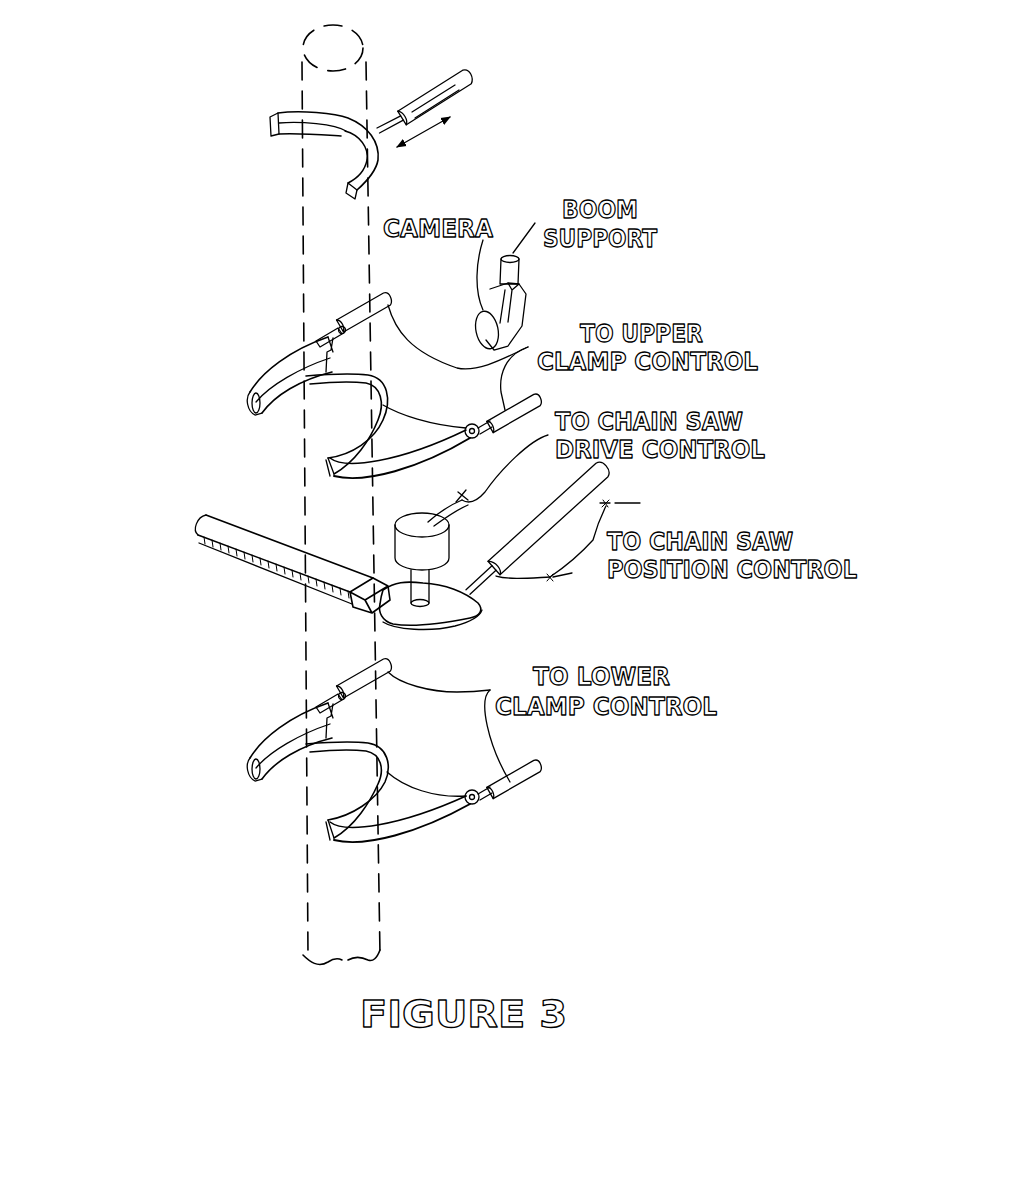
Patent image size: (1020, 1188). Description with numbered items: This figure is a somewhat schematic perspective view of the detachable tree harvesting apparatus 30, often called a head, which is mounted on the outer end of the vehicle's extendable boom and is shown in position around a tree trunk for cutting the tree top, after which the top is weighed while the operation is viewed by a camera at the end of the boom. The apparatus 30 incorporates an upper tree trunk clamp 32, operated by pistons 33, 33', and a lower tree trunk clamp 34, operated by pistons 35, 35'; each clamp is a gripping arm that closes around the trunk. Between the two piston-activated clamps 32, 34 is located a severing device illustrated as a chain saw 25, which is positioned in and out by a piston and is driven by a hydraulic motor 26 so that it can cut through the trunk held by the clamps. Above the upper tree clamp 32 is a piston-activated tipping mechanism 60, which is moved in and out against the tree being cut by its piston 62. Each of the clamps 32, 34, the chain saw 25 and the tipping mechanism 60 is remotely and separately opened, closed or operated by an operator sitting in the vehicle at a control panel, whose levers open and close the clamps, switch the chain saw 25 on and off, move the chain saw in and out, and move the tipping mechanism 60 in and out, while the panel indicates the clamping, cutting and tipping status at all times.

The tree harvesting apparatus 30 is at (173, 603).
The tipping mechanism 60 is at (394, 79).
The piston 62 is at (470, 88).
The upper tree trunk clamp 32 is at (255, 360).
The piston 33 is at (525, 392).
The piston 33' is at (422, 323).
The chain saw 25 is at (380, 568).
The hydraulic motor 26 is at (440, 557).
The lower tree trunk clamp 34 is at (270, 713).
The piston 35 is at (528, 747).
The piston 35' is at (403, 678).